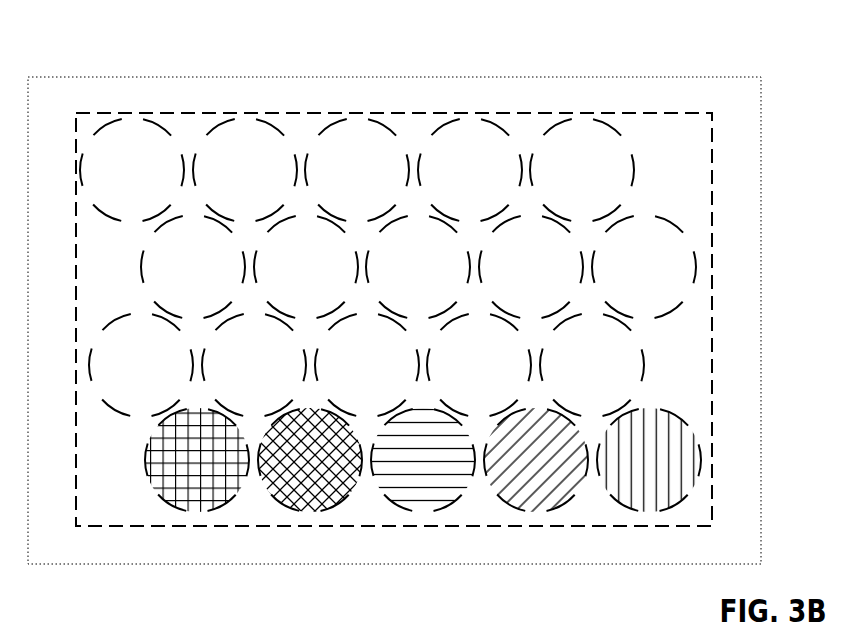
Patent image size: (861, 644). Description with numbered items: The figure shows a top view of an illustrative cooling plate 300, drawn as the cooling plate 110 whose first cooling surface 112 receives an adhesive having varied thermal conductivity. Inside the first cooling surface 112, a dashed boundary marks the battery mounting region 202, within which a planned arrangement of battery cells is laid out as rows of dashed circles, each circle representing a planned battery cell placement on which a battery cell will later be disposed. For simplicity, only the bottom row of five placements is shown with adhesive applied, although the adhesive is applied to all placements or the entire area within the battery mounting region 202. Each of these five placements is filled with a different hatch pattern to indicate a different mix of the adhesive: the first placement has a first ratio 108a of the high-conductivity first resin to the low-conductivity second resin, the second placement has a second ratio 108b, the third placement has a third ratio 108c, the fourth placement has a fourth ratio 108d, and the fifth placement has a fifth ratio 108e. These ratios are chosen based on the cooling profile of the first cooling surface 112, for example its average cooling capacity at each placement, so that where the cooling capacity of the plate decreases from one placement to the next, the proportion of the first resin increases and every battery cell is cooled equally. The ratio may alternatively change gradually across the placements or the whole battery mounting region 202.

The cooling plate 300 is at (393, 45).
The cooling plate 110 is at (776, 92).
The first cooling surface 112 is at (691, 88).
The battery mounting region 202 is at (107, 527).
The first ratio 108a is at (197, 452).
The second ratio 108b is at (310, 452).
The third ratio 108c is at (423, 452).
The fourth ratio 108d is at (536, 452).
The fifth ratio 108e is at (649, 452).